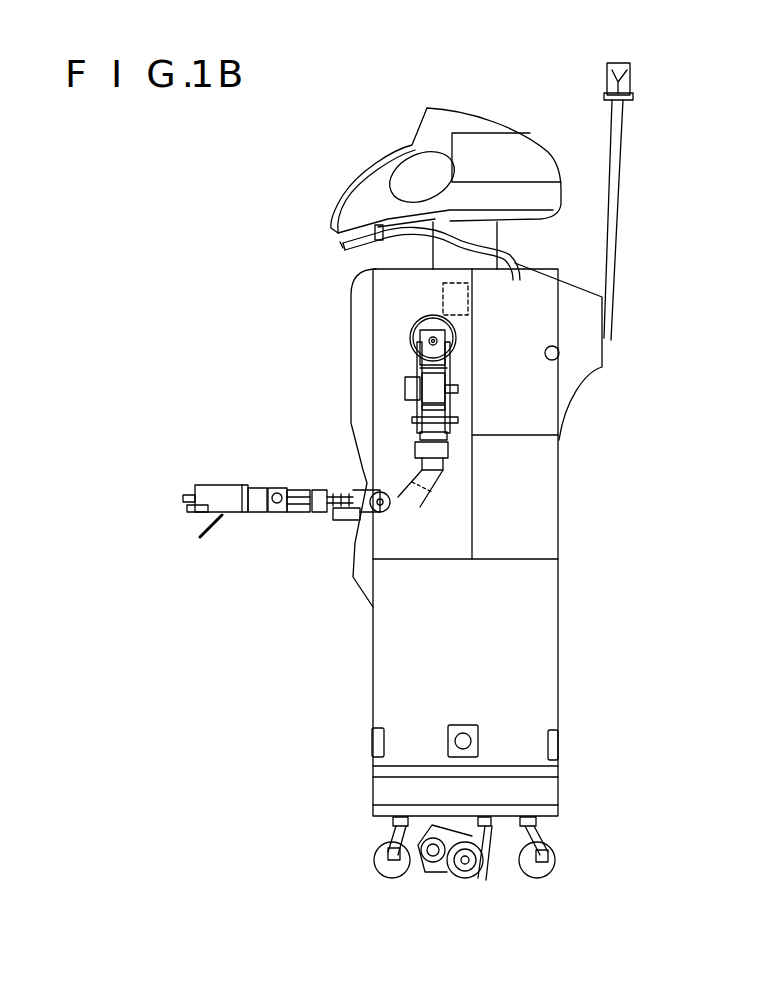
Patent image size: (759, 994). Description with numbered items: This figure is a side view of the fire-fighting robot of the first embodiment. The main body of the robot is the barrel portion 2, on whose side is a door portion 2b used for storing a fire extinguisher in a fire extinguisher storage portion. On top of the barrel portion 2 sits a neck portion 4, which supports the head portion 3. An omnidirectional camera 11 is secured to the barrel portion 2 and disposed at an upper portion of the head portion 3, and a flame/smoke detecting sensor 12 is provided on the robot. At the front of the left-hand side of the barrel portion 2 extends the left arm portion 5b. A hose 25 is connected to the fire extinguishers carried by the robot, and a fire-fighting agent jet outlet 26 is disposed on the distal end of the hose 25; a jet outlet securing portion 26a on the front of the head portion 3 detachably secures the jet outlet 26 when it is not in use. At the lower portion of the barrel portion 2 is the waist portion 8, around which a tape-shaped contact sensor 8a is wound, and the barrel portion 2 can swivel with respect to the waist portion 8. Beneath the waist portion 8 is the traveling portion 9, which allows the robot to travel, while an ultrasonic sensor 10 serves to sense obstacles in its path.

The barrel portion 2 is at (600, 424).
The door portion 2b is at (559, 357).
The head portion 3 is at (384, 121).
The neck portion 4 is at (559, 253).
The left arm portion 5b is at (303, 531).
The waist portion 8 is at (587, 806).
The tape-shaped contact sensor 8a is at (540, 777).
The traveling portion 9 is at (358, 835).
The ultrasonic sensor 10 is at (553, 742).
The omnidirectional camera 11 is at (607, 76).
The flame/smoke detecting sensor 12 is at (452, 306).
The hose 25 is at (520, 261).
The fire-fighting agent jet outlet 26 is at (340, 243).
The jet outlet securing portion 26a is at (372, 241).